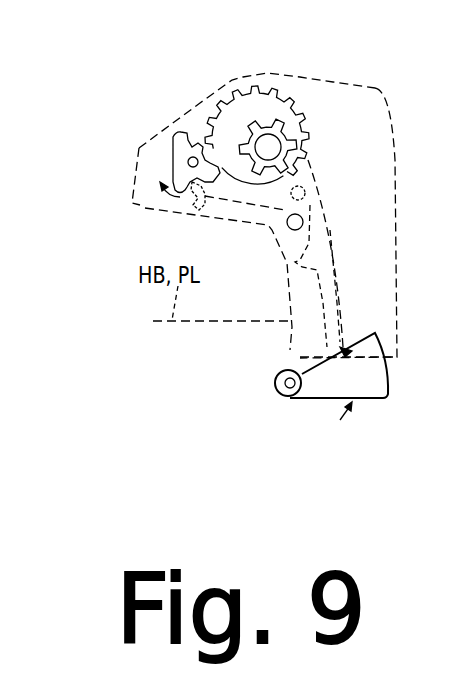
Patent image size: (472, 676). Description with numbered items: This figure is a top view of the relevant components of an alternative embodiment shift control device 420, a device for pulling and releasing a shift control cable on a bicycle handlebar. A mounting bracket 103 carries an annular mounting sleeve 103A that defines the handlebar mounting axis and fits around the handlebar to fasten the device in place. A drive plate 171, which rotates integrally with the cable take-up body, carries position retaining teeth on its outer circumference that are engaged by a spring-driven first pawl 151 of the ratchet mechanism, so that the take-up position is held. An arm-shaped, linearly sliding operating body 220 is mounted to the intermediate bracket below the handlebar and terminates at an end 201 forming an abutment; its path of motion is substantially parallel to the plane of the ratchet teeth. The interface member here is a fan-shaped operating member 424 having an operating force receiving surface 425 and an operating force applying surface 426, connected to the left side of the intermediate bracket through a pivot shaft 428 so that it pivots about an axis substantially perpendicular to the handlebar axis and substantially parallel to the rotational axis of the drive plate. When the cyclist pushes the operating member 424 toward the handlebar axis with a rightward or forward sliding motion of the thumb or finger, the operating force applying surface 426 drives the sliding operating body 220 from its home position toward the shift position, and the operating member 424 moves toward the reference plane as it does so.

The mounting bracket 103 is at (375, 87).
The annular mounting sleeve 103A is at (291, 349).
The first pawl 151 is at (173, 167).
The drive plate 171 is at (306, 114).
The end 201 is at (302, 361).
The sliding operating body 220 is at (330, 230).
The shift control device 420 is at (143, 106).
The fan-shaped operating member 424 is at (380, 410).
The operating force receiving surface 425 is at (327, 400).
The operating force applying surface 426 is at (348, 348).
The pivot shaft 428 is at (294, 397).